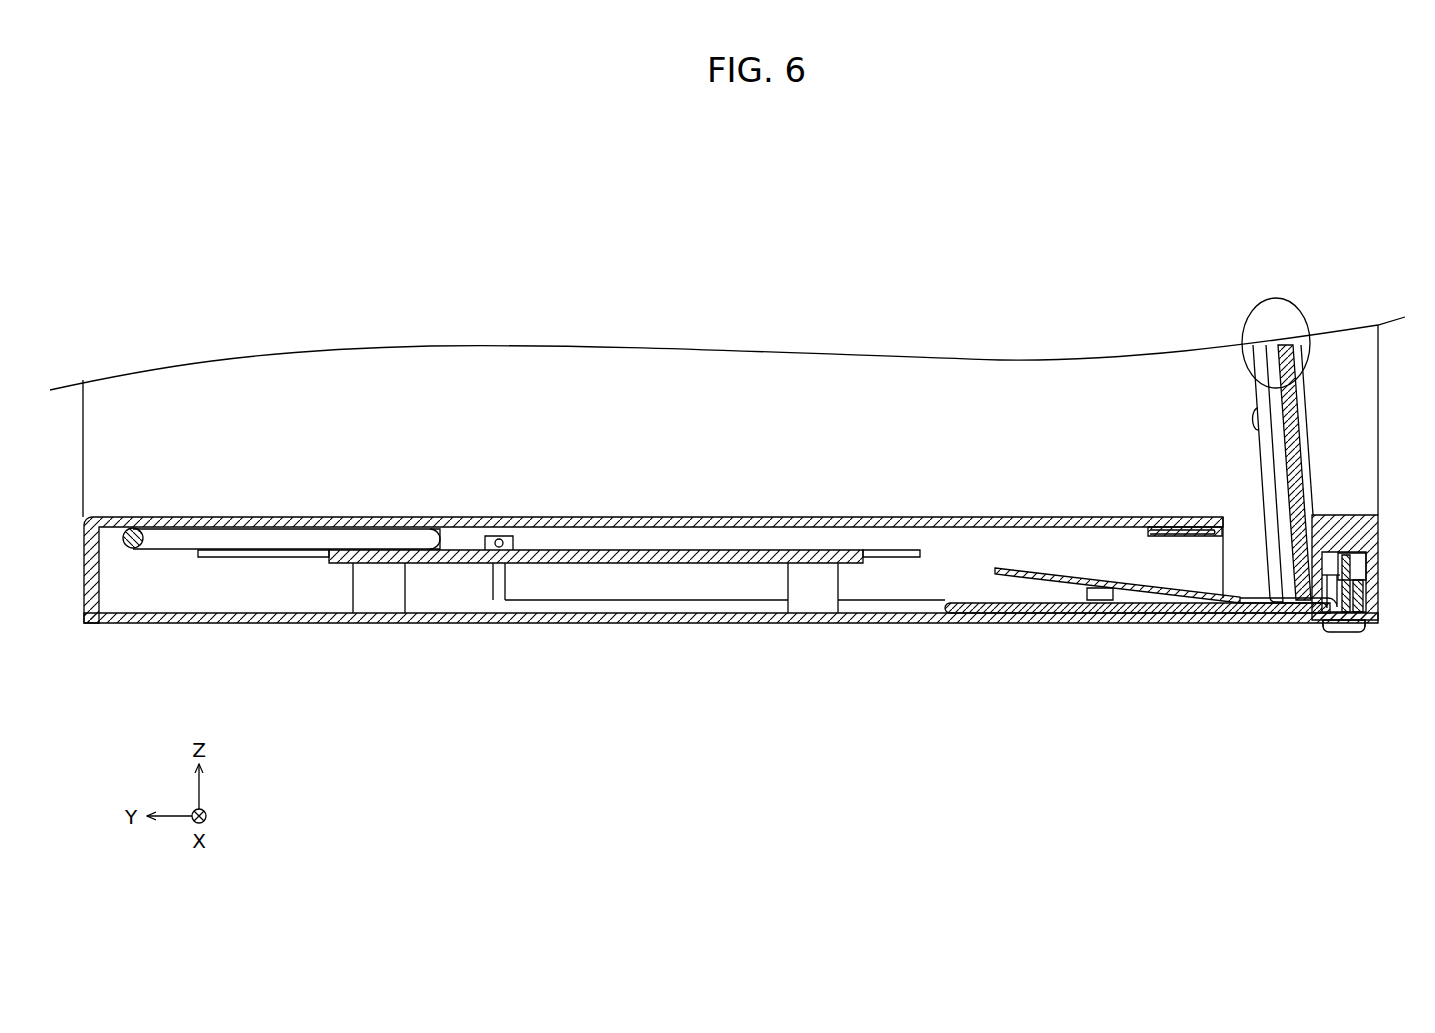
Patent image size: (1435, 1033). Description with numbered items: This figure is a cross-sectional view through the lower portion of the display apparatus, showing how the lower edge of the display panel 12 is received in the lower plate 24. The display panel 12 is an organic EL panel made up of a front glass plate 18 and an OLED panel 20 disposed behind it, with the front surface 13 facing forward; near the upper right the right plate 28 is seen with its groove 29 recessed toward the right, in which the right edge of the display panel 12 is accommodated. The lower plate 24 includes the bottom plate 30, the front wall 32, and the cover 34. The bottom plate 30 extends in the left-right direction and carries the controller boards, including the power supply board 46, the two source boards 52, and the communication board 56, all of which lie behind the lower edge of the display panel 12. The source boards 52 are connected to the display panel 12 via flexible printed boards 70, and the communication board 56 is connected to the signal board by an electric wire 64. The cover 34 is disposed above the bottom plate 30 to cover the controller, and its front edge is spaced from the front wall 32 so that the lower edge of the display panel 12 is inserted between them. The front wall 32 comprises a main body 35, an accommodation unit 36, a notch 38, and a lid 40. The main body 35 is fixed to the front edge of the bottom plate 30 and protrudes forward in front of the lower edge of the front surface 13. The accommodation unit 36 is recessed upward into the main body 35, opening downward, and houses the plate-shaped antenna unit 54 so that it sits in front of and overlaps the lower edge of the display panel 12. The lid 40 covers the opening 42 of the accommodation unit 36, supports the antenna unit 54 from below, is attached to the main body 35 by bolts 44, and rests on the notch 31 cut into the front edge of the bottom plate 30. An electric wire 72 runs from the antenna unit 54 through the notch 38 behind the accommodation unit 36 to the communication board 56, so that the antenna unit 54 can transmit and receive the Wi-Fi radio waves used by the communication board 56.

The display panel 12 is at (1287, 410).
The front surface 13 is at (1302, 413).
The front glass plate 18 is at (1297, 382).
The OLED panel 20 is at (1272, 388).
The lower plate 24 is at (731, 487).
The right plate 28 is at (768, 397).
The groove 29 is at (1258, 412).
The bottom plate 30 is at (445, 623).
The notch 31 is at (1322, 626).
The front wall 32 is at (1366, 542).
The cover 34 is at (470, 525).
The main body 35 is at (1350, 535).
The accommodation unit 36 is at (1364, 562).
The notch 38 is at (1327, 573).
The lid 40 is at (1364, 598).
The opening 42 is at (1359, 628).
The bolts 44 is at (1345, 628).
The power supply board 46 is at (703, 555).
The source boards 52 is at (1073, 578).
The antenna unit 54 is at (1351, 574).
The communication board 56 is at (893, 555).
The electric wire 64 is at (278, 540).
The flexible printed boards 70 is at (1182, 594).
The electric wire 72 is at (1043, 606).